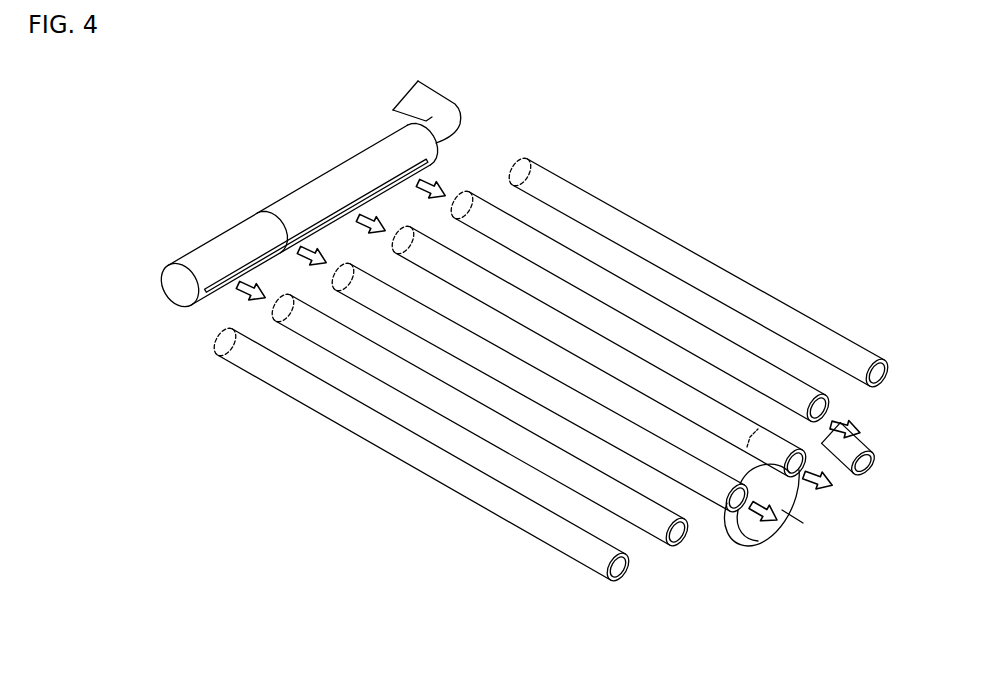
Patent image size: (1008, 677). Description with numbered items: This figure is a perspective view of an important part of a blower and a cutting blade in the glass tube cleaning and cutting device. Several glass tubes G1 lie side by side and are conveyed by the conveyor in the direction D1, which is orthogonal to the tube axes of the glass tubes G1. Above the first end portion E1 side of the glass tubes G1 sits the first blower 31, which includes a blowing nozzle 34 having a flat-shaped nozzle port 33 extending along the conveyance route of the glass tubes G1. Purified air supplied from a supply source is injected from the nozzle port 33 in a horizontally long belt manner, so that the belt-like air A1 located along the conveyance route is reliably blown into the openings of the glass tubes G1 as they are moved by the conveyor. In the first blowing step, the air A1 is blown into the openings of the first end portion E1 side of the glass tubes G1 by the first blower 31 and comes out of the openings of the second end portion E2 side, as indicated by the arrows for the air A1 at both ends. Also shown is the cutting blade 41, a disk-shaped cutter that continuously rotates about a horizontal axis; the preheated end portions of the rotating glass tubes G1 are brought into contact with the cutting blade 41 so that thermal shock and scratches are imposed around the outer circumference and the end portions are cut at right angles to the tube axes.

The first blower 31 is at (307, 197).
The nozzle port 33 is at (275, 252).
The blowing nozzle 34 is at (305, 192).
The cutting blade 41 is at (755, 548).
The air A1 is at (546, 351).
The first end portion E1 is at (208, 337).
The second end portion E2 is at (640, 578).
The glass tube G1 is at (300, 390).
The conveying direction D1 is at (813, 237).